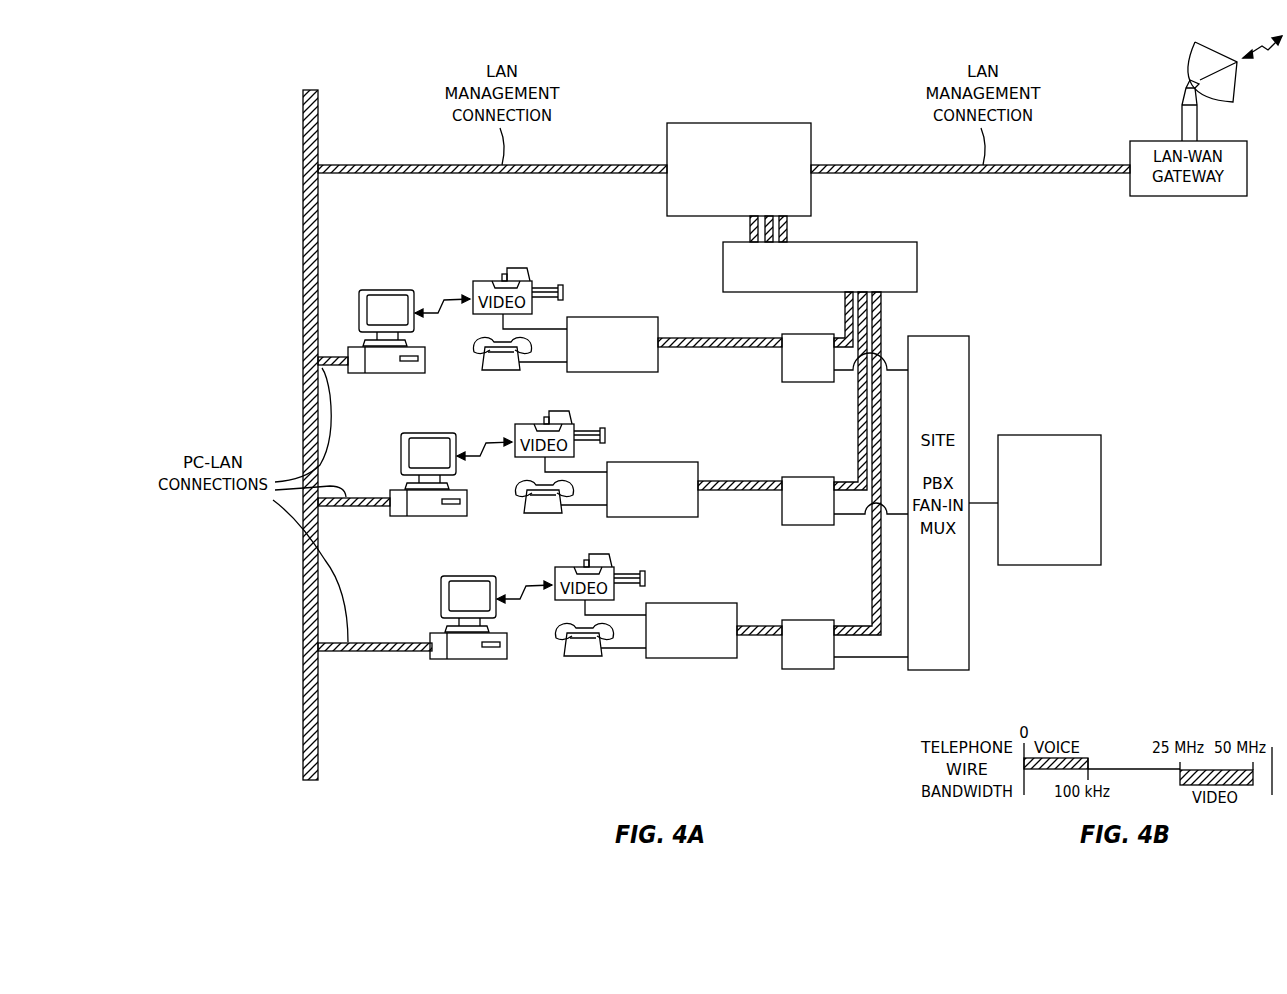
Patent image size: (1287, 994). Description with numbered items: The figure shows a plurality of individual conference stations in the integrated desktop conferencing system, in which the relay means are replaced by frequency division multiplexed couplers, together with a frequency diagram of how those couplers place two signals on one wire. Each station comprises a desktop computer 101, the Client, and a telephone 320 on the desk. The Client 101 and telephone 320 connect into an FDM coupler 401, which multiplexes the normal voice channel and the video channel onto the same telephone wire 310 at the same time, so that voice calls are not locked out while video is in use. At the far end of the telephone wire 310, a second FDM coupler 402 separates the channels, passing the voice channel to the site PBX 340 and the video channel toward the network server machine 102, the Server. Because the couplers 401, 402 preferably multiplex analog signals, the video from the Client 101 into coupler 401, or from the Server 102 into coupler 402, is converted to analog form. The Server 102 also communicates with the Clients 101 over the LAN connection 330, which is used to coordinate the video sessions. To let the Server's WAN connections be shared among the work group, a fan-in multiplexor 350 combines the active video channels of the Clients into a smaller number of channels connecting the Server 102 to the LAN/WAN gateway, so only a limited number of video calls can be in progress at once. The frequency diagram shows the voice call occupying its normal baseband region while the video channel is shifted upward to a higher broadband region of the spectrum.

The LAN connection 330 is at (303, 137).
The network server machine 102 is at (767, 207).
The fan-in multiplexor 350 is at (879, 286).
The desktop computer 101 is at (384, 373).
The telephone 320 is at (480, 370).
The FDM coupler 401 is at (633, 372).
The FDM coupler 402 is at (815, 382).
The site PBX 340 is at (1061, 557).
The telephone wire 310 is at (757, 636).